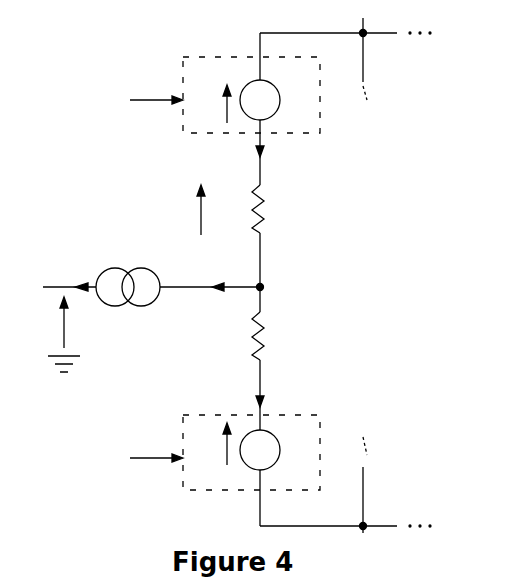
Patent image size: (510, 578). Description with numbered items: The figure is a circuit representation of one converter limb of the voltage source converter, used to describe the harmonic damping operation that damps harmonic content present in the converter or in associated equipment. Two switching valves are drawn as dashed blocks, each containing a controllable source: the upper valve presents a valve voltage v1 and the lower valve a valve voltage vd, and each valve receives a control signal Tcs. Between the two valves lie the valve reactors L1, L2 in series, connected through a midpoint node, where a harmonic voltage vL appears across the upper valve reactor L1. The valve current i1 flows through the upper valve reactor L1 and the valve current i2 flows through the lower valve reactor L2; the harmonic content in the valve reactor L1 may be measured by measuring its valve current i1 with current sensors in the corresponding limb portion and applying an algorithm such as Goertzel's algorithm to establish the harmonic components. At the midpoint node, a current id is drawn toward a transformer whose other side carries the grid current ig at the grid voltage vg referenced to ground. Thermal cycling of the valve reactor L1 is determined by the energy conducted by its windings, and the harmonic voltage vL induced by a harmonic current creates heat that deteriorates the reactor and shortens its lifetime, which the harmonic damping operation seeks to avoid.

The controllable source control signal Tcs is at (156, 265).
The first source voltage v1 is at (218, 104).
The valve current i1 is at (271, 152).
The valve reactor L1 is at (242, 209).
The harmonic voltage vL is at (182, 210).
The differential current id is at (218, 277).
The grid current ig is at (67, 279).
The grid voltage vg is at (56, 334).
The valve reactor L2 is at (242, 336).
The second branch current i2 is at (272, 398).
The second source voltage vd is at (217, 444).